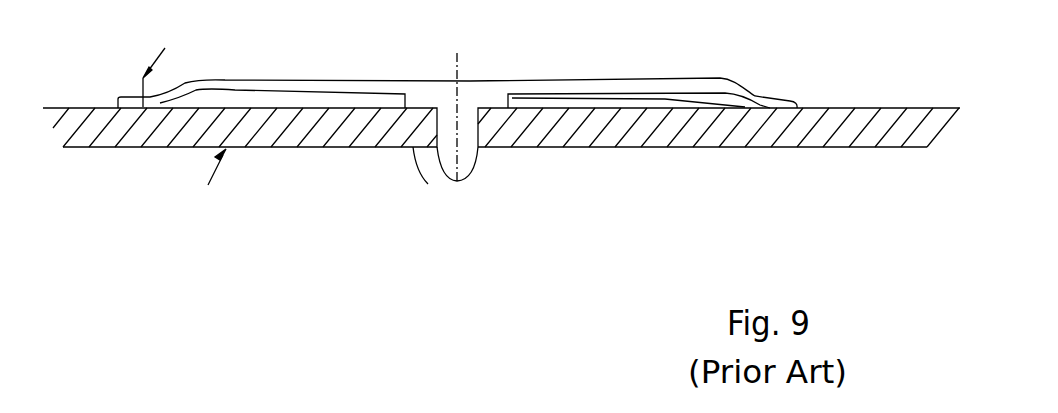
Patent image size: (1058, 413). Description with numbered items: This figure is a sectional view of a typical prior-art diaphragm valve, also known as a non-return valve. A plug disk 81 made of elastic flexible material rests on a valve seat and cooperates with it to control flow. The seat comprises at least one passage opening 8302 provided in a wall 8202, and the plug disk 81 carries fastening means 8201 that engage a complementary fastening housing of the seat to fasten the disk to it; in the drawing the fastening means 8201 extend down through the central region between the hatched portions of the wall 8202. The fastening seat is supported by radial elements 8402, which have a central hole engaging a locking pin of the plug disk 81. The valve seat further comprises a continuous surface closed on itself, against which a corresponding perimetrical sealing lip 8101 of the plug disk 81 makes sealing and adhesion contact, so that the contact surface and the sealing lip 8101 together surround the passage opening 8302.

The plug disk 81 is at (648, 77).
The perimetrical sealing lip 8101 is at (750, 97).
The fastening means 8201 is at (428, 188).
The wall 8202 is at (870, 147).
The passage opening 8302 is at (353, 147).
The radial elements 8402 is at (580, 138).